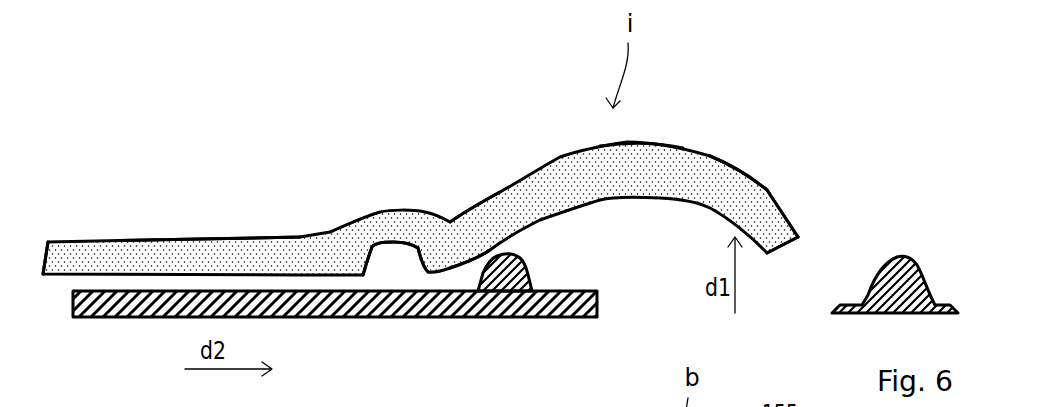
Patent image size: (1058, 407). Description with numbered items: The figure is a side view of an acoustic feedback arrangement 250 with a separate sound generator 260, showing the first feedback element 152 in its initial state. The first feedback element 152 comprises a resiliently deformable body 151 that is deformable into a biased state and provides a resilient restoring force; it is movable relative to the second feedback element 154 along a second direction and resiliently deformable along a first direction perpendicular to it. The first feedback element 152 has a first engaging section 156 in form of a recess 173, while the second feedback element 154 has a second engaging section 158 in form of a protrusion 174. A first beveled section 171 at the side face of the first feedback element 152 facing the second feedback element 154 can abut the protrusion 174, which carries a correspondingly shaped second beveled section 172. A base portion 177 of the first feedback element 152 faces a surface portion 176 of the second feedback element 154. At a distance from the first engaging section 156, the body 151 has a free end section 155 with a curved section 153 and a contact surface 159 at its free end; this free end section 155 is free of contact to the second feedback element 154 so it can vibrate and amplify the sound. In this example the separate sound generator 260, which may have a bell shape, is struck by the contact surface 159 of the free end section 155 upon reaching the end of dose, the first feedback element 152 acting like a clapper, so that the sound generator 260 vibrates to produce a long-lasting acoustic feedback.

The resiliently deformable body 151 is at (333, 241).
The first feedback element 152 is at (185, 239).
The curved section 153 is at (683, 147).
The second feedback element 154 is at (115, 318).
The free end section 155 is at (744, 182).
The first engaging section 156 is at (390, 245).
The second engaging section 158 is at (512, 255).
The contact surface 159 is at (770, 254).
The first beveled section 171 is at (463, 263).
The second beveled section 172 is at (472, 223).
The recess 173 is at (392, 266).
The protrusion 174 is at (500, 281).
The surface portion 176 is at (253, 290).
The base portion 177 is at (77, 250).
The acoustic feedback arrangement 250 is at (352, 148).
The sound generator 260 is at (895, 257).